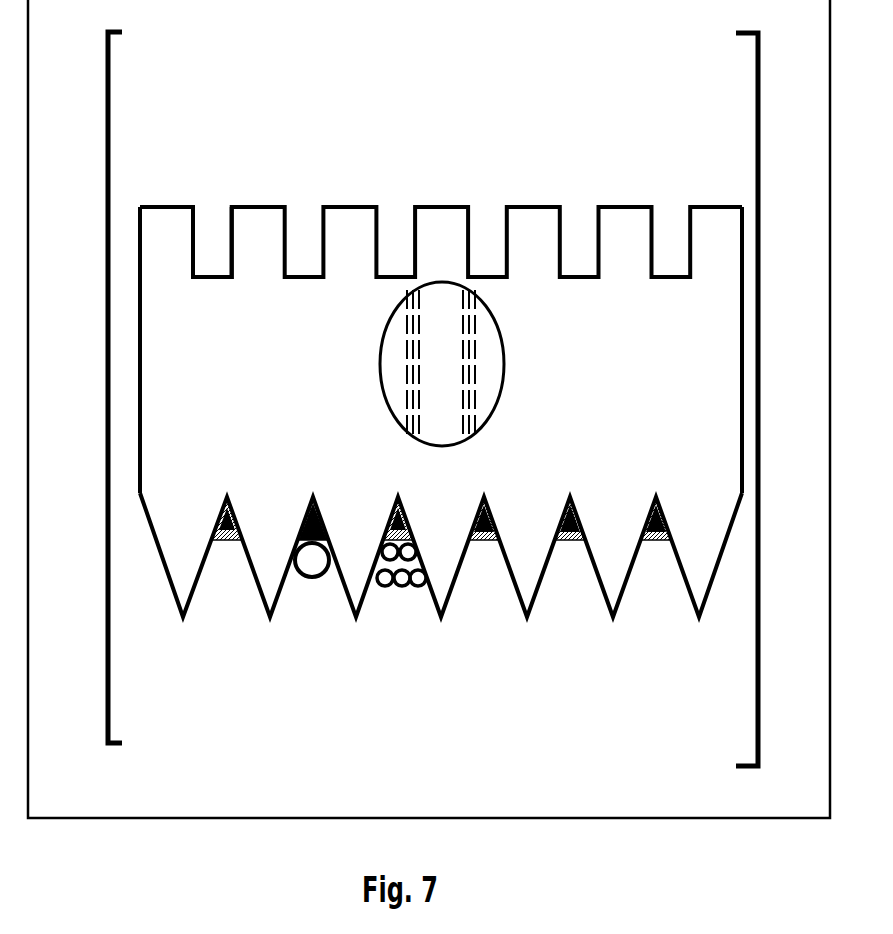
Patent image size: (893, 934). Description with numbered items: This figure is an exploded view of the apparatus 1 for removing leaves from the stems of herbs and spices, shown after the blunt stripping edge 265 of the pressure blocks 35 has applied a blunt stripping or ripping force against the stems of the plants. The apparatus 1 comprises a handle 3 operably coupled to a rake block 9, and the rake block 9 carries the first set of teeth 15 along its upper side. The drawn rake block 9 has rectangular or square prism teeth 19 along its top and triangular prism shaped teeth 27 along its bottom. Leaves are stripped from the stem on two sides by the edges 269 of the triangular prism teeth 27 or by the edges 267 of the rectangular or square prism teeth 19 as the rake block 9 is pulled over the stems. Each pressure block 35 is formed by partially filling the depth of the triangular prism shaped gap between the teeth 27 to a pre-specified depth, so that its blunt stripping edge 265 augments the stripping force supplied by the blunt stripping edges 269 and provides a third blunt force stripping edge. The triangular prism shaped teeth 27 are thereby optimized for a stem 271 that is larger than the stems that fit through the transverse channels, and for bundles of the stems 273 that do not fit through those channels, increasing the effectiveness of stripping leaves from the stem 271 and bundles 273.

The apparatus 1 is at (442, 90).
The handle 3 is at (108, 390).
The rake block 9 is at (466, 160).
The first set of teeth 15 is at (228, 146).
The rectangular or square prism teeth 19 is at (258, 192).
The triangular prism shaped teeth 27 is at (277, 645).
The pressure block 35 is at (220, 515).
The blunt stripping edge 265 is at (228, 542).
The edges 267 is at (228, 257).
The edges 269 is at (260, 607).
The stem 271 is at (320, 572).
The bundles of the stems 273 is at (410, 590).